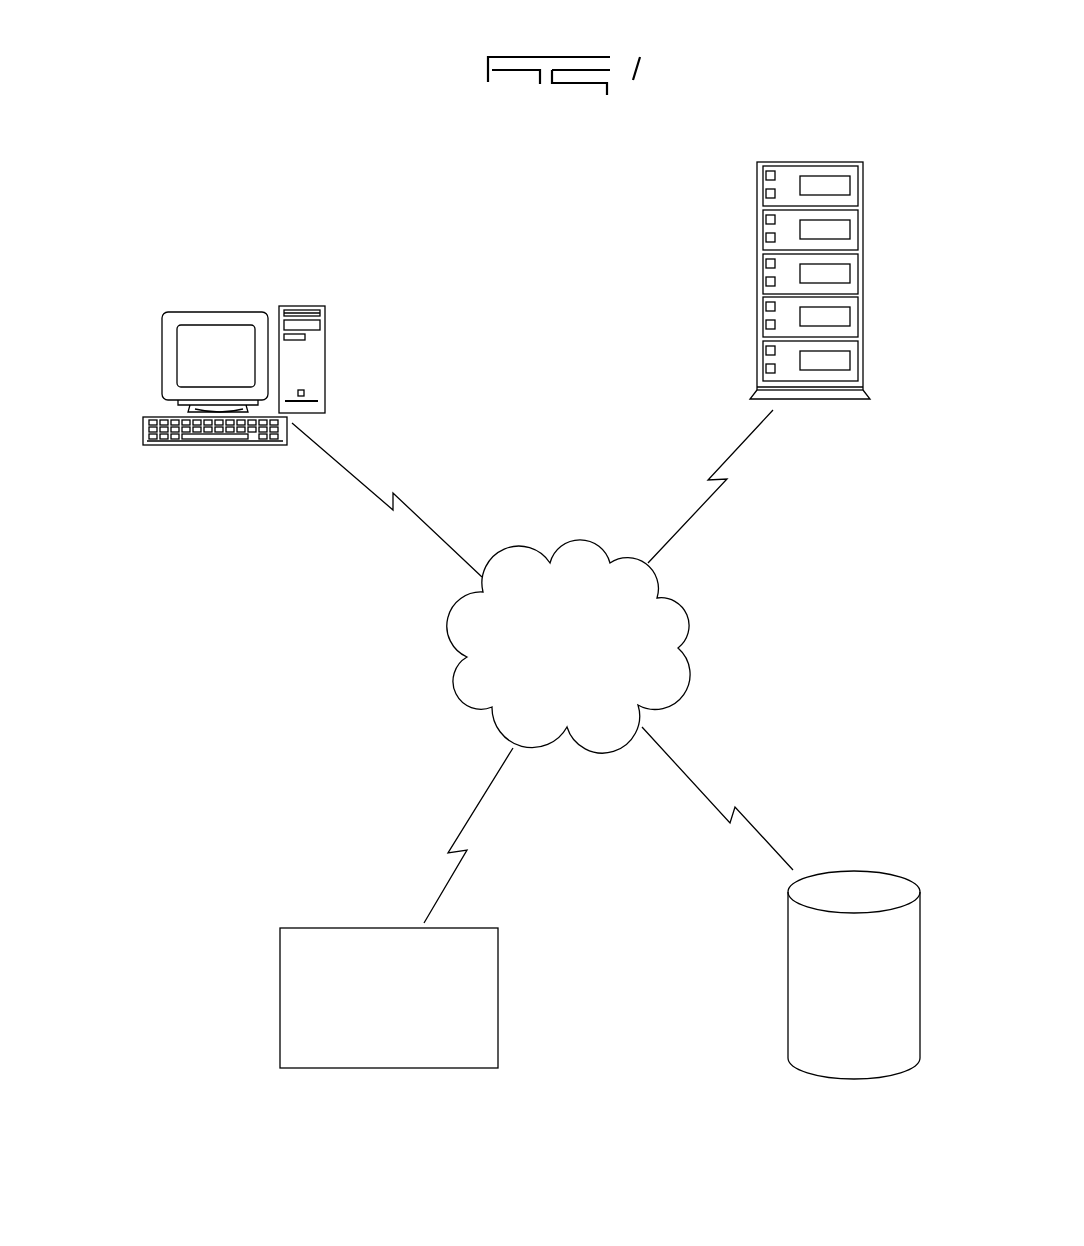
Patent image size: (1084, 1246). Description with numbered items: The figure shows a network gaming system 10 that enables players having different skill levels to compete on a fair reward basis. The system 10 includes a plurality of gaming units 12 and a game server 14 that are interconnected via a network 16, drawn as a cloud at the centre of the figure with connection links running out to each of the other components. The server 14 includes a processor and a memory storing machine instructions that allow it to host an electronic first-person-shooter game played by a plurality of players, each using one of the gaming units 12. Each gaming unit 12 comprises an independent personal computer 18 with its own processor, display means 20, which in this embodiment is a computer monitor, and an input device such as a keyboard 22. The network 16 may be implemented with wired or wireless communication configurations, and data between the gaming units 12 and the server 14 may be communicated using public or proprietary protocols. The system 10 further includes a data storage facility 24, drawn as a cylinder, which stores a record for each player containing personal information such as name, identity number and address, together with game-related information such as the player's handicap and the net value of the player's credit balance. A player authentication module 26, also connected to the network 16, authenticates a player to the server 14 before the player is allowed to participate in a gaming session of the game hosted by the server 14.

The network gaming system 10 is at (712, 578).
The gaming units 12 is at (258, 386).
The game server 14 is at (755, 262).
The network 16 is at (660, 667).
The personal computer 18 is at (312, 283).
The display means 20 is at (217, 310).
The keyboard 22 is at (143, 433).
The data storage facility 24 is at (858, 890).
The player authentication module 26 is at (472, 960).